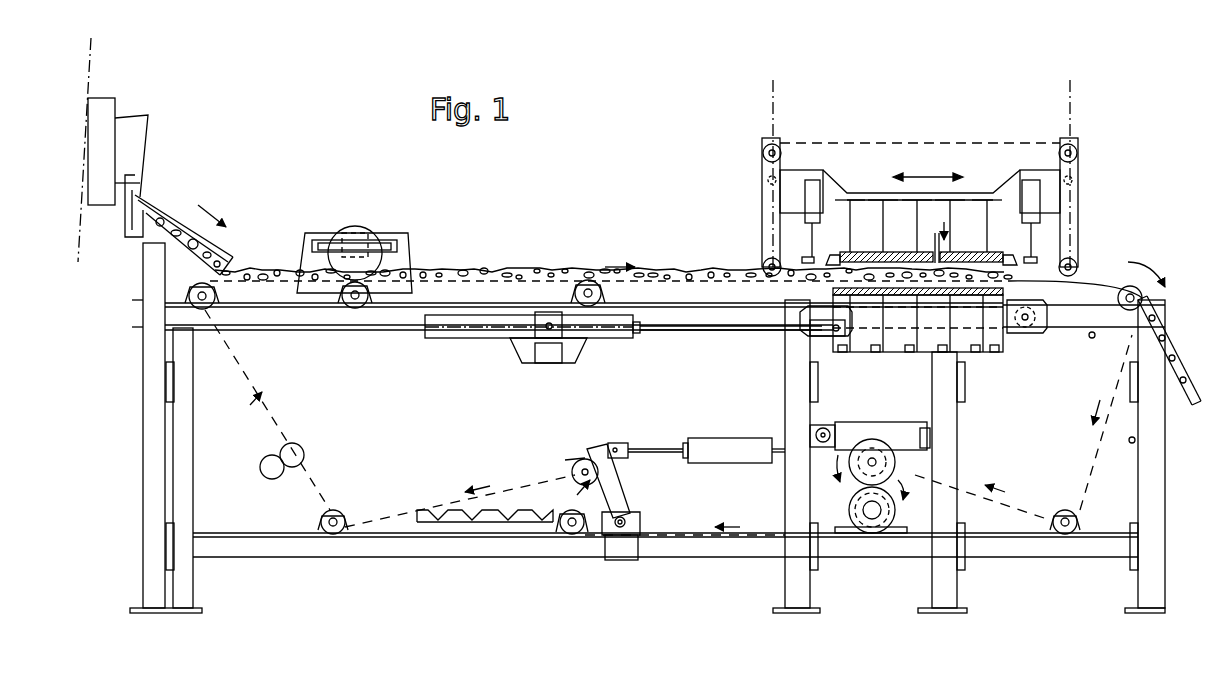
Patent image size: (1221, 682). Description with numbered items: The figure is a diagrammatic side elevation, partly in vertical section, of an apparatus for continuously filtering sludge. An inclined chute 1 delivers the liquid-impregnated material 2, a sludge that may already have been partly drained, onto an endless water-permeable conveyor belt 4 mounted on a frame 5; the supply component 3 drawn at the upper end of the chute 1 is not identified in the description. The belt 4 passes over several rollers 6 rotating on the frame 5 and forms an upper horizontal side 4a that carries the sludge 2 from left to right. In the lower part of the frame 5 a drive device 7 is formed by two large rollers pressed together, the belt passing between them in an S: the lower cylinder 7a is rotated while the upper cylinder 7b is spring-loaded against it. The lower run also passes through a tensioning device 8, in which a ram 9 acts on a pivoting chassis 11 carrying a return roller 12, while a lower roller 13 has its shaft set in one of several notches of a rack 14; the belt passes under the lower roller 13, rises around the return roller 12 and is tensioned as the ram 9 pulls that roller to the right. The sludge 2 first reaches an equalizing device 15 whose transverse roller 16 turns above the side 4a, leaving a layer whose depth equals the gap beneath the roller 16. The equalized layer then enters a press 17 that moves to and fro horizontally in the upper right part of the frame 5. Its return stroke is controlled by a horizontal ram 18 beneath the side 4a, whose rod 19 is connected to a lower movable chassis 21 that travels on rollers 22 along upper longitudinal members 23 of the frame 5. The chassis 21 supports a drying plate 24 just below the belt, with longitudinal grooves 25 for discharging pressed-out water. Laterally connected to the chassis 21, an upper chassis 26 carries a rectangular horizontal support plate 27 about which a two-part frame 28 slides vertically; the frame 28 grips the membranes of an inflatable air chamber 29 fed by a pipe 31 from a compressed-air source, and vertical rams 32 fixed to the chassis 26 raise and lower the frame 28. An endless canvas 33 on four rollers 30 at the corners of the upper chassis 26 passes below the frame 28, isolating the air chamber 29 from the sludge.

The inclined chute 1 is at (153, 210).
The material impregnated with liquid 2 is at (182, 230).
The hopper 3 is at (106, 96).
The endless conveyor belt 4 is at (232, 340).
The upper horizontal side 4a is at (510, 280).
The frame 5 is at (383, 332).
The rollers 6 is at (352, 300).
The drive device 7 is at (899, 474).
The lower cylinder 7a is at (872, 525).
The upper cylinder 7b is at (865, 448).
The tensioning device 8 is at (567, 450).
The ram 9 is at (722, 448).
The pivoting chassis 11 is at (612, 490).
The return roller 12 is at (585, 468).
The lower roller 13 is at (572, 530).
The rack 14 is at (480, 523).
The equalizing device 15 is at (396, 225).
The roller 16 is at (353, 232).
The press 17 is at (750, 183).
The ram 18 is at (481, 322).
The rod 19 is at (700, 332).
The lower movable chassis 21 is at (1010, 346).
The rollers 22 is at (800, 320).
The upper longitudinal members 23 is at (1108, 296).
The drying plate 24 is at (1040, 305).
The longitudinal grooves 25 is at (1080, 318).
The upper chassis 26 is at (1000, 186).
The horizontal support plate 27 is at (877, 254).
The frame 28 is at (837, 256).
The inflatable air chamber 29 is at (905, 285).
The rollers 30 is at (766, 160).
The pipe 31 is at (937, 233).
The rams 32 is at (807, 190).
The endless canvas 33 is at (1010, 141).